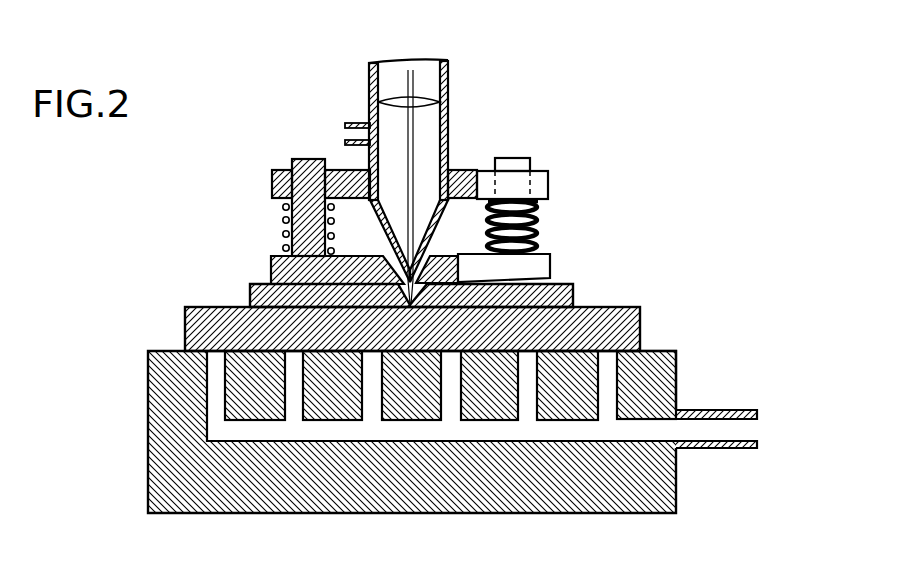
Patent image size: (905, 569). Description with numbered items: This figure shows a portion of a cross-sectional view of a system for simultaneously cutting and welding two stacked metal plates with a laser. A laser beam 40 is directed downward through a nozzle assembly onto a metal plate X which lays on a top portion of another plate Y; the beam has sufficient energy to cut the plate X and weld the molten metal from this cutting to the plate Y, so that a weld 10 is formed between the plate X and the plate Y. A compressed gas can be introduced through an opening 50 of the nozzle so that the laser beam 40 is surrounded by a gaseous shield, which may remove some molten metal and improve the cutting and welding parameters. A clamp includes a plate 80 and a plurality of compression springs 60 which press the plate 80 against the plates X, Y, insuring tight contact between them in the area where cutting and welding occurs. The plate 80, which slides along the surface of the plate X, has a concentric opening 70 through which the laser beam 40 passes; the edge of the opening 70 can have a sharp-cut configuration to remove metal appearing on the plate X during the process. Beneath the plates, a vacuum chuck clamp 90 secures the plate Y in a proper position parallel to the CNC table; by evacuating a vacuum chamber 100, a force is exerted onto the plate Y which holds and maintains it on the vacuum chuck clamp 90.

The weld 10 is at (405, 272).
The laser beam 40 is at (417, 72).
The opening of the nozzle 50 is at (345, 134).
The compression springs 60 is at (283, 217).
The opening 70 is at (428, 260).
The plate 80 is at (271, 264).
The vacuum chuck clamp 90 is at (677, 362).
The vacuum chamber 100 is at (757, 430).
The metal plate X is at (573, 297).
The plate Y is at (642, 318).